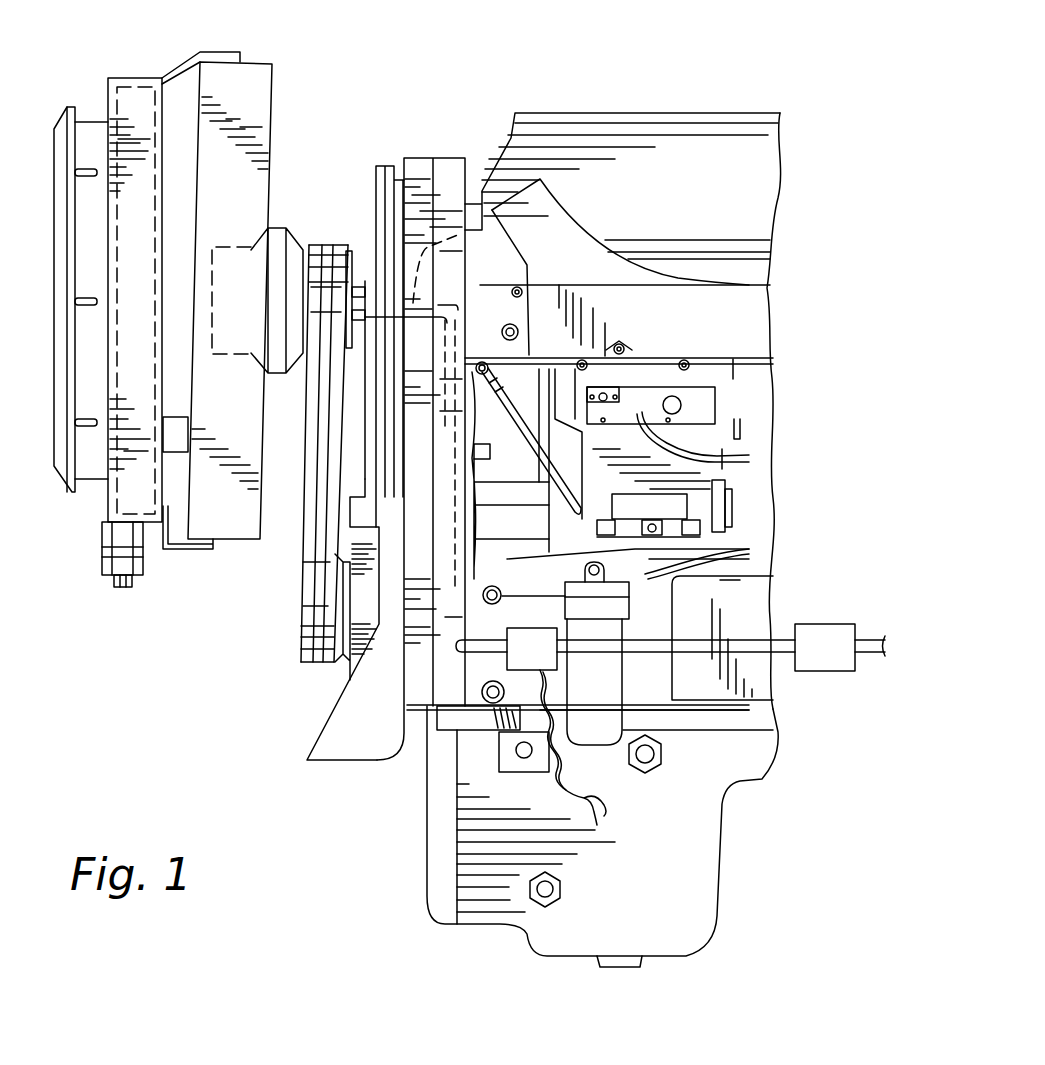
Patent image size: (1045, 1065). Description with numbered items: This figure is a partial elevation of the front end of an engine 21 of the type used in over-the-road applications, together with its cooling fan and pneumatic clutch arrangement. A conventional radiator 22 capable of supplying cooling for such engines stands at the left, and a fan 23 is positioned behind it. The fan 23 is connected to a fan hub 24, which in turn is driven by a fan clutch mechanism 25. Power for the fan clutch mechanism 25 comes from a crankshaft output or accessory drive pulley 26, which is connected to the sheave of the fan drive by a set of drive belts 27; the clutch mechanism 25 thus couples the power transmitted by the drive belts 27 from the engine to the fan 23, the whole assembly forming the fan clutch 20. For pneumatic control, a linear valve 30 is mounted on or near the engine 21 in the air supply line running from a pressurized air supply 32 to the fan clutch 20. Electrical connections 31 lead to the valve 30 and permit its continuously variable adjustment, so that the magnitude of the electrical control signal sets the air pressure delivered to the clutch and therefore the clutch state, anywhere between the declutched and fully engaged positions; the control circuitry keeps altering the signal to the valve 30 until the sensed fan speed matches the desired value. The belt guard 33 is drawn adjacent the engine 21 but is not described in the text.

The fan clutch 20 is at (332, 117).
The engine 21 is at (676, 122).
The radiator 22 is at (97, 493).
The fan 23 is at (264, 98).
The fan hub 24 is at (225, 239).
The fan clutch mechanism 25 is at (288, 238).
The accessory drive pulley 26 is at (292, 631).
The drive belts 27 is at (299, 566).
The linear valve 30 is at (505, 657).
The electrical connections 31 is at (601, 784).
The pressurized air supply 32 is at (670, 647).
The belt guard 33 is at (504, 219).